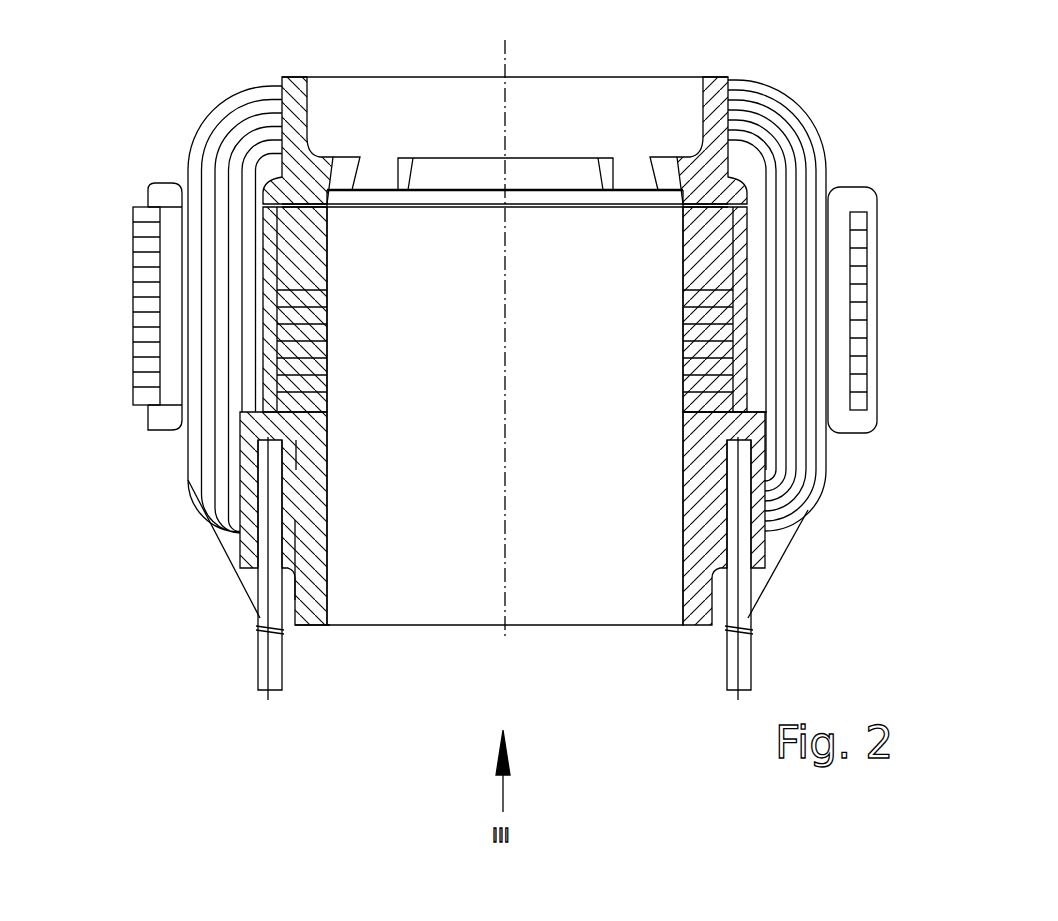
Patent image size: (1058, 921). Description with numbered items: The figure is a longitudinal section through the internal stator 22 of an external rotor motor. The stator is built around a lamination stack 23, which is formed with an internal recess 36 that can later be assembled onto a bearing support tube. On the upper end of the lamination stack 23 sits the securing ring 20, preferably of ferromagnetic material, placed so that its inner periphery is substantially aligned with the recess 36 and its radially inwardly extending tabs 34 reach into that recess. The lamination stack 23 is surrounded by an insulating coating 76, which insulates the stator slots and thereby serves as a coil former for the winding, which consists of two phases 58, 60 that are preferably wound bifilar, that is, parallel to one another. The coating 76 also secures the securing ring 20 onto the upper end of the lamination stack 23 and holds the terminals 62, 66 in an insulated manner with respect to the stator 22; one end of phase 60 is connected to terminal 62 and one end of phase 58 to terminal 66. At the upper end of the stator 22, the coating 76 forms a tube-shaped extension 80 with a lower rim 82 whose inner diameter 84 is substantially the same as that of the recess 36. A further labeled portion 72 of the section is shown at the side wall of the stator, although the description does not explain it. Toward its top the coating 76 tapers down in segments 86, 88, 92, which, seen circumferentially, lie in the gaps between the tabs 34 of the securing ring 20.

The securing ring 20 is at (520, 205).
The internal stator 22 is at (800, 82).
The lamination stack 23 is at (298, 270).
The tabs 34 is at (396, 208).
The internal recess 36 is at (298, 336).
The winding phase 58 is at (773, 577).
The winding phase 60 is at (232, 563).
The terminal 62 is at (262, 660).
The terminal 66 is at (742, 655).
The upper wall 72 is at (280, 212).
The insulating coating 76 is at (318, 140).
The tube-shaped extension 80 is at (300, 520).
The lower rim 82 is at (300, 622).
The inner diameter 84 is at (300, 455).
The tapered segment 86 is at (430, 177).
The tapered segment 88 is at (660, 165).
The tapered segment 92 is at (356, 170).